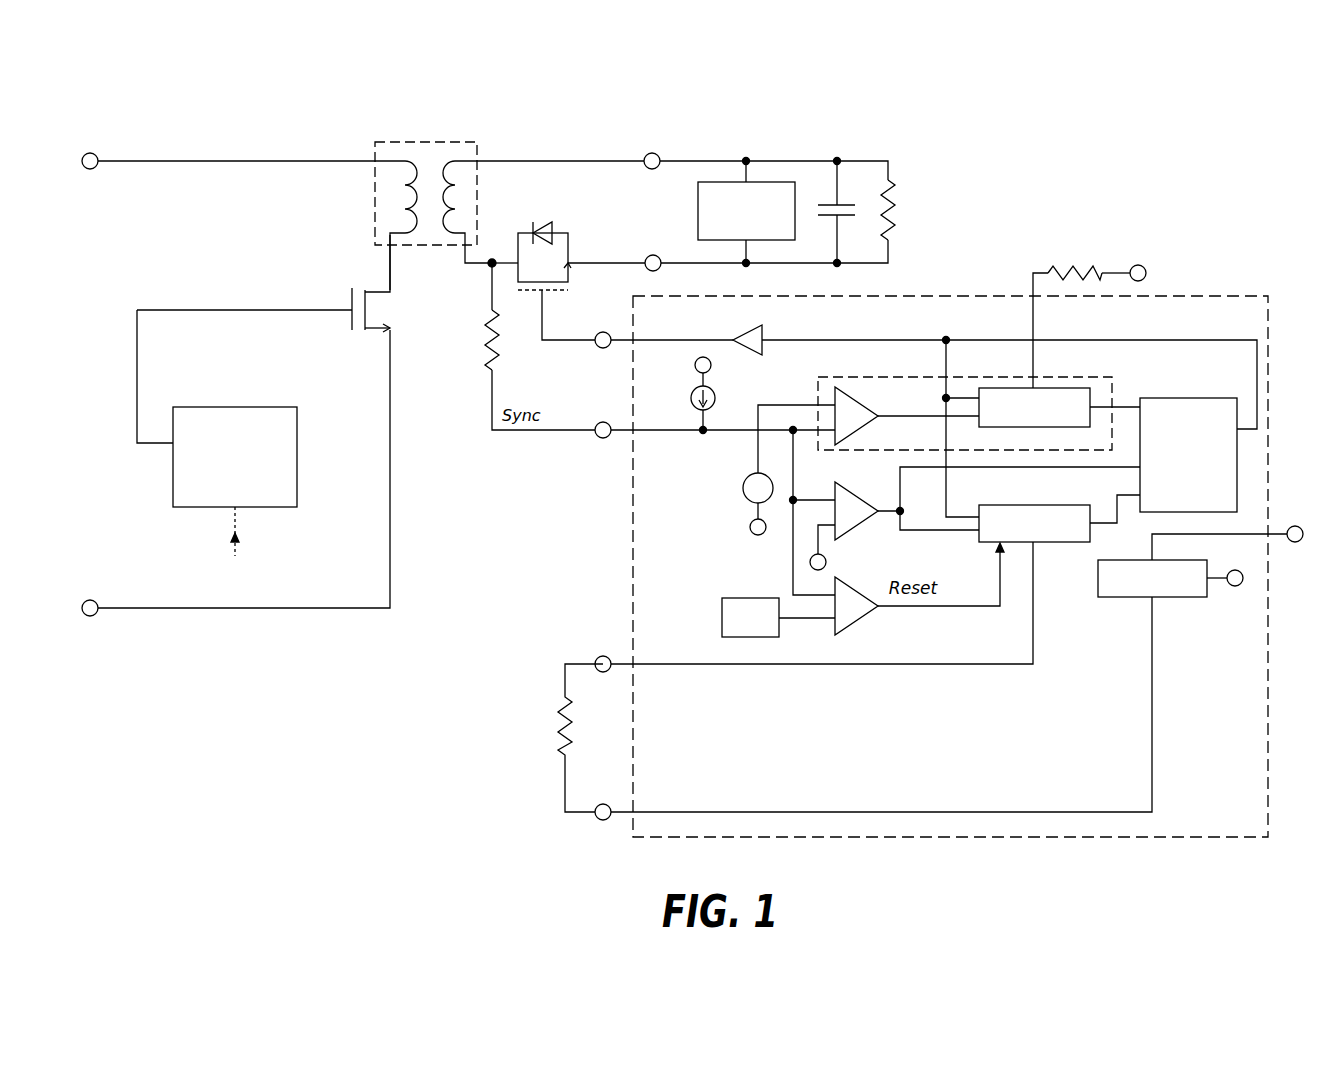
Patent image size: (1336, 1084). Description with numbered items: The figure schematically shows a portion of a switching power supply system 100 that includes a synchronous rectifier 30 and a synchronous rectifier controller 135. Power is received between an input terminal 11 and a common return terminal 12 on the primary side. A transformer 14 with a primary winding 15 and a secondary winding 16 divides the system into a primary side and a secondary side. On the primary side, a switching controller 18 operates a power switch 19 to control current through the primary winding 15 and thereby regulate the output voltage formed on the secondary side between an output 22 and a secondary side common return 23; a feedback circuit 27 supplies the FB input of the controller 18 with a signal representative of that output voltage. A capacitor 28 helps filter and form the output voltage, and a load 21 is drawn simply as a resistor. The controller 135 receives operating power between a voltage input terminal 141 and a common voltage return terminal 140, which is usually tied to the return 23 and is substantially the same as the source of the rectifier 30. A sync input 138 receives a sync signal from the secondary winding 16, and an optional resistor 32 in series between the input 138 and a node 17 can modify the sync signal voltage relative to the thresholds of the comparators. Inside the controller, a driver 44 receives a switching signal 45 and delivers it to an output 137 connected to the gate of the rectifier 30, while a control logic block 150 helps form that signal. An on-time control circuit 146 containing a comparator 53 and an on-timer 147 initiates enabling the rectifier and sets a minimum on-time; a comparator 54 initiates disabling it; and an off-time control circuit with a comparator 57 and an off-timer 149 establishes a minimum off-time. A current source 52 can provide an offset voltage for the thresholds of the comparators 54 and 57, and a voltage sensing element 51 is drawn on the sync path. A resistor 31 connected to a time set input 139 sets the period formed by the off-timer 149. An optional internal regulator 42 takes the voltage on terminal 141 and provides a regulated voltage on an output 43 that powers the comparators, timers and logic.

The switching power supply system 100 is at (392, 904).
The input terminal 11 is at (94, 169).
The common return terminal 12 is at (94, 616).
The transformer 14 is at (390, 142).
The primary winding 15 is at (402, 205).
The secondary winding 16 is at (450, 197).
The node 17 is at (495, 258).
The primary side switching controller 18 is at (207, 407).
The primary side power switch 19 is at (350, 300).
The load 21 is at (897, 194).
The output 22 is at (656, 153).
The secondary side common return 23 is at (652, 255).
The feedback circuit 27 is at (698, 205).
The capacitor 28 is at (845, 204).
The synchronous rectifier 30 is at (570, 243).
The resistor 31 is at (558, 732).
The optional resistor 32 is at (487, 345).
The internal regulator 42 is at (1132, 598).
The output 43 is at (710, 370).
The driver circuit 44 is at (735, 336).
The switching signal 45 is at (800, 340).
The voltage sensor 51 is at (742, 486).
The current source 52 is at (694, 406).
The comparator 53 is at (866, 405).
The comparator 54 is at (860, 527).
The comparator 57 is at (865, 622).
The synchronous rectifier controller 135 is at (628, 612).
The output 137 is at (598, 348).
The sync input 138 is at (598, 438).
The time set input 139 is at (598, 656).
The common voltage return terminal 140 is at (1141, 266).
The voltage input terminal 141 is at (1298, 526).
The on-time control circuit 146 is at (838, 377).
The on-timer 147 is at (1035, 427).
The off-timer 149 is at (1040, 543).
The control logic 150 is at (1200, 398).